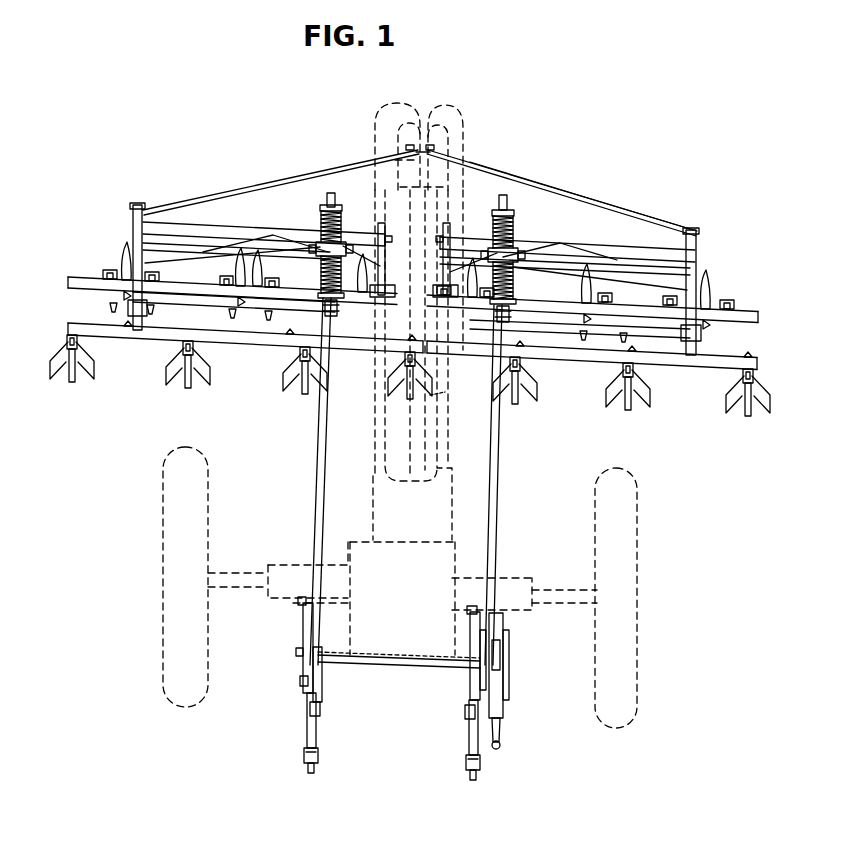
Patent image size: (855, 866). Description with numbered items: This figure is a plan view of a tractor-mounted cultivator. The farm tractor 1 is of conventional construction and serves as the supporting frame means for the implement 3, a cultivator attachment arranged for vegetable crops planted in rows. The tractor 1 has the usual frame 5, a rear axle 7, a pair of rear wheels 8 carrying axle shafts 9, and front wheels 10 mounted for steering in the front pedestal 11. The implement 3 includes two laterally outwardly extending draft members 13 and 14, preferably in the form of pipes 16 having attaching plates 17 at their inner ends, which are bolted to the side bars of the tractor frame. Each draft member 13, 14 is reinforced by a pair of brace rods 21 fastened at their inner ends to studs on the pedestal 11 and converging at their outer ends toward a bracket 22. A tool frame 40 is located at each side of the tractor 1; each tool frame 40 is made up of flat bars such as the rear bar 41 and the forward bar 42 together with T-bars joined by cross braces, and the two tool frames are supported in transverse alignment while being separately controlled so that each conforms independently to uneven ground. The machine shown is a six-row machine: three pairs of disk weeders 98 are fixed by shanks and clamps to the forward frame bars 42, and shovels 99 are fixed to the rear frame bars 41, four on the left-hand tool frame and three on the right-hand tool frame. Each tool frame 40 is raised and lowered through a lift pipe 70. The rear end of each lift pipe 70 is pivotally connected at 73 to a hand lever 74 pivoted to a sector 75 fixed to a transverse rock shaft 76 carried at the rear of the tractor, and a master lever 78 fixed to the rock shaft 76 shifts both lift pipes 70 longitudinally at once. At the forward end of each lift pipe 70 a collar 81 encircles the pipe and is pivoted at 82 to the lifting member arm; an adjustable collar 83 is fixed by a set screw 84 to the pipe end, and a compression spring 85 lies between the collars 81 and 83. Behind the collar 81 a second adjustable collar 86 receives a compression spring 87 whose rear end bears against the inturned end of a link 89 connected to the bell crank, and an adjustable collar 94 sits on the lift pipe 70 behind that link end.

The farm tractor 1 is at (362, 510).
The implement 3 is at (272, 143).
The frame 5 is at (445, 392).
The rear axle 7 is at (298, 568).
The rear wheels 8 is at (205, 658).
The axle shafts 9 is at (226, 580).
The front wheels 10 is at (440, 106).
The front pedestal 11 is at (440, 150).
The draft member 13 is at (229, 222).
The draft member 14 is at (593, 243).
The pipes 16 is at (185, 225).
The attaching plates 17 is at (385, 268).
The brace rods 21 is at (604, 216).
The bracket 22 is at (137, 205).
The tool frame 40 is at (399, 368).
The flat bar 41 is at (66, 328).
The flat bar 42 is at (72, 277).
The lift pipe 70 is at (320, 465).
The pivotal connection 73 is at (300, 680).
The hand lever 74 is at (307, 710).
The sector 75 is at (318, 675).
The rock shaft 76 is at (407, 668).
The master lever 78 is at (502, 712).
The collar 81 is at (318, 263).
The pivot 82 is at (340, 248).
The adjustable collar 83 is at (320, 208).
The set screw 84 is at (329, 204).
The compression spring 85 is at (320, 222).
The adjustable collar 86 is at (320, 270).
The compression spring 87 is at (518, 325).
The link 89 is at (325, 303).
The adjustable collar 94 is at (325, 306).
The disk weeders 98 is at (235, 272).
The shovels 99 is at (92, 364).